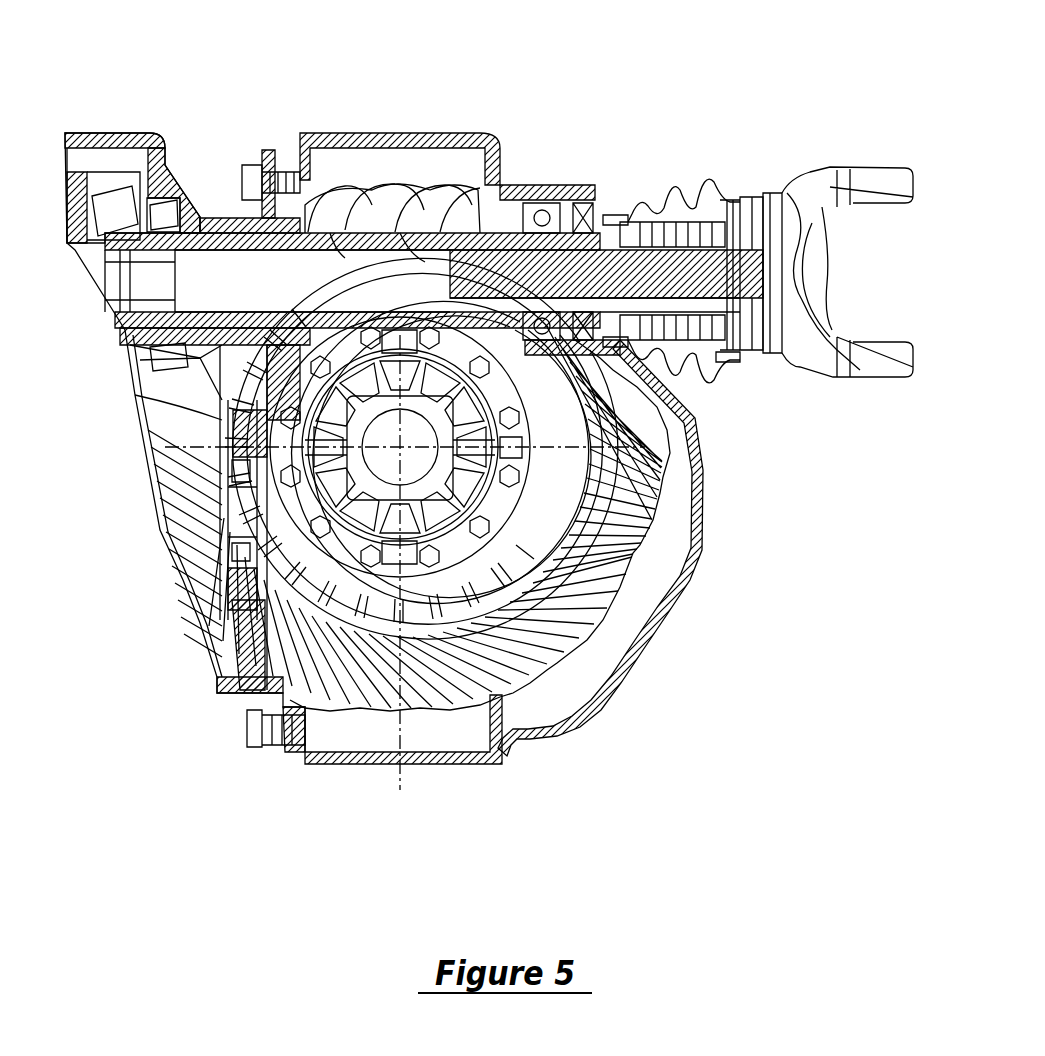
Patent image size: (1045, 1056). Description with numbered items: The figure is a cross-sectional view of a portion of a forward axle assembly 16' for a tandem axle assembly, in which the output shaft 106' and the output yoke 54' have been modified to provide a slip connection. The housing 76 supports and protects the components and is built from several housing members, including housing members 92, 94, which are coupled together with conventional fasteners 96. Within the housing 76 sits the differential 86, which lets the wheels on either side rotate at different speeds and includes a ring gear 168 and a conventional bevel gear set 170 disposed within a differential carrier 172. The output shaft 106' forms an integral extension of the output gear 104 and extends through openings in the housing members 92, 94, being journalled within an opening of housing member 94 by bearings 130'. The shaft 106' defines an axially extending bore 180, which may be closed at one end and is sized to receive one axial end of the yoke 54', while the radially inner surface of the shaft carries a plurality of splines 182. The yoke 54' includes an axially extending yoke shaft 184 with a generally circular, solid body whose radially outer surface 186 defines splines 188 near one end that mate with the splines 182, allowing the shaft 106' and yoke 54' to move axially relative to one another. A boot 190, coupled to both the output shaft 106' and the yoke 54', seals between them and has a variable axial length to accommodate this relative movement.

The forward axle assembly 16' is at (582, 53).
The output yoke 54' is at (838, 243).
The housing 76 is at (400, 788).
The differential 86 is at (580, 660).
The housing member 92 is at (470, 766).
The housing member 94 is at (690, 618).
The fastener 96 is at (282, 748).
The output gear 104 is at (146, 232).
The output shaft 106' is at (332, 416).
The bearings 130' is at (560, 241).
The ring gear 168 is at (640, 555).
The bevel gear set 170 is at (517, 453).
The differential carrier 172 is at (517, 423).
The bore 180 is at (340, 228).
The splines 182 is at (418, 182).
The yoke shaft 184 is at (606, 256).
The radially outer surface 186 is at (663, 240).
The splines 188 is at (733, 225).
The boot 190 is at (720, 364).